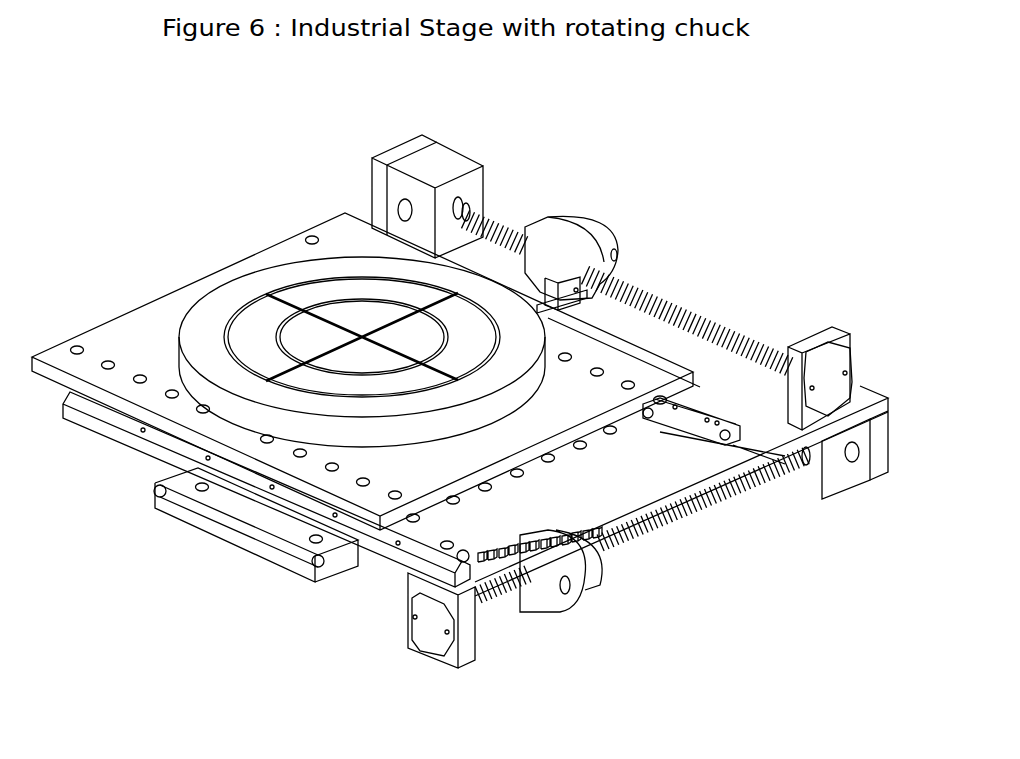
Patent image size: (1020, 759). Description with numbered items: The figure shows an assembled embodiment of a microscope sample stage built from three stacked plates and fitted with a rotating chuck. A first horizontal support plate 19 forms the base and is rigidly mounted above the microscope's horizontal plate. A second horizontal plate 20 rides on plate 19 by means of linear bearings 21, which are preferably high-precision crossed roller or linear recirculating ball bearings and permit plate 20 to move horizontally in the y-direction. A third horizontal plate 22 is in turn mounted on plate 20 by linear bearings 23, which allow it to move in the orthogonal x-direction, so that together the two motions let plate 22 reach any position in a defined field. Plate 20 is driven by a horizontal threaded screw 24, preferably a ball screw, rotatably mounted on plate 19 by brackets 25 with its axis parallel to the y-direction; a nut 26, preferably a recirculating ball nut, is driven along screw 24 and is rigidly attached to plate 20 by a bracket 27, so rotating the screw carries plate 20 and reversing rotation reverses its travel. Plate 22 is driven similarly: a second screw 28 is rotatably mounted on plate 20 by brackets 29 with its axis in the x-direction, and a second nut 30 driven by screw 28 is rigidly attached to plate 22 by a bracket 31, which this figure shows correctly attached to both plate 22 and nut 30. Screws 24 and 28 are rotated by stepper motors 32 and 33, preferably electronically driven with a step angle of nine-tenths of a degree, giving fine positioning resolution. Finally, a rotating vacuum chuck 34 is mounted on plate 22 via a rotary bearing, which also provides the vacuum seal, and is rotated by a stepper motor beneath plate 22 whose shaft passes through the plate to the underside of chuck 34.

The first horizontal support plate 19 is at (227, 540).
The second horizontal plate 20 is at (72, 417).
The linear bearings 21 is at (312, 560).
The third horizontal plate 22 is at (572, 447).
The linear bearings 23 is at (688, 437).
The horizontal threaded screw 24 is at (688, 523).
The brackets 25 is at (810, 503).
The nut 26 is at (593, 587).
The bracket 27 is at (512, 560).
The second screw 28 is at (728, 312).
The brackets 29 is at (842, 325).
The second nut 30 is at (613, 220).
The bracket 31 is at (558, 321).
The stepper motor 32 is at (880, 483).
The stepper motor 33 is at (398, 143).
The rotating vacuum chuck 34 is at (278, 280).